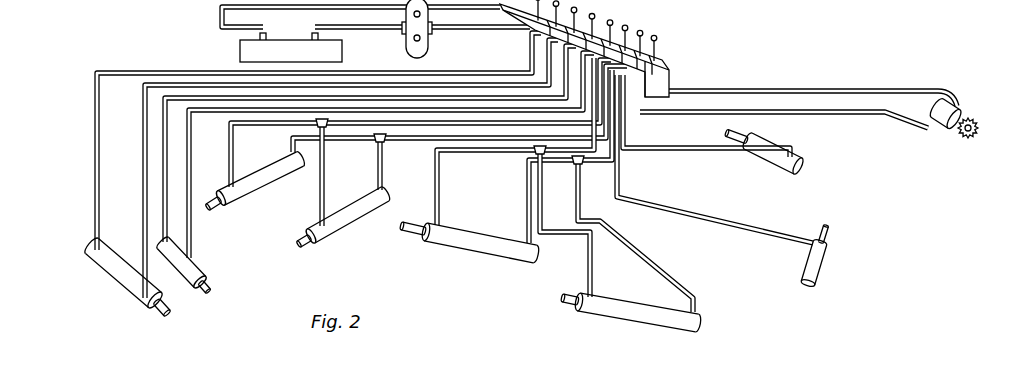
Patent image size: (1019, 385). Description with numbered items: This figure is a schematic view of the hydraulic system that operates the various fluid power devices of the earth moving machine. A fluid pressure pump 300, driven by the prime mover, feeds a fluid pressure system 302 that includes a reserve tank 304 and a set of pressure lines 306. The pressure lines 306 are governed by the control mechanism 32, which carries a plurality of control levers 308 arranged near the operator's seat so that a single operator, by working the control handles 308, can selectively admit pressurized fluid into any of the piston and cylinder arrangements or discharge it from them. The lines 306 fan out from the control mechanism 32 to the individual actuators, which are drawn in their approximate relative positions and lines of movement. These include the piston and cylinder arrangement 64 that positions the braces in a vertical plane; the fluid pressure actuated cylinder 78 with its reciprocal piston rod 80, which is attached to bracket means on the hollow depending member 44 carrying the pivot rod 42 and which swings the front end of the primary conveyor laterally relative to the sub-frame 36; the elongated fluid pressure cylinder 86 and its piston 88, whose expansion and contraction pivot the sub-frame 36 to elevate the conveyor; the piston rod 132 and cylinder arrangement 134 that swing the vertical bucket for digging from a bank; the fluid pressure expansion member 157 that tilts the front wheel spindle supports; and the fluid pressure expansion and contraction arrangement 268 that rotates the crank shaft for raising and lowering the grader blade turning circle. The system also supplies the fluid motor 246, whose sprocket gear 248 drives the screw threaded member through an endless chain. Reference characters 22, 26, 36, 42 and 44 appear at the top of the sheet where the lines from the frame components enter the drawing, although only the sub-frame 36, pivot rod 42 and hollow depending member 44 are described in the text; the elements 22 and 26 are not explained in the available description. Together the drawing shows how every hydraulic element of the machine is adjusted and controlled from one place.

The supply rod 22 is at (458, 20).
The frame member 26 is at (134, 6).
The control mechanism 32 is at (675, 66).
The sub-frame 36 is at (86, 6).
The pivot rod 42 is at (31, 6).
The hollow depending member 44 is at (8, 6).
The piston and cylinder arrangement 64 is at (768, 158).
The fluid pressure actuated cylinder 78 is at (114, 259).
The reciprocal piston rod 80 is at (169, 320).
The elongated fluid pressure cylinder 86 is at (479, 246).
The piston 88 is at (408, 229).
The piston rod 132 is at (214, 209).
The fluid pressure cylinder arrangement 134 is at (291, 168).
The fluid pressure expansion member 157 is at (196, 259).
The fluid motor 246 is at (953, 104).
The sprocket gear 248 is at (967, 142).
The fluid pressure expansion and contraction arrangement 268 is at (819, 268).
The fluid pressure pump 300 is at (428, 49).
The fluid pressure system 302 is at (86, 96).
The reserve tank 304 is at (240, 51).
The pressure lines 306 is at (785, 90).
The control levers 308 is at (657, 44).